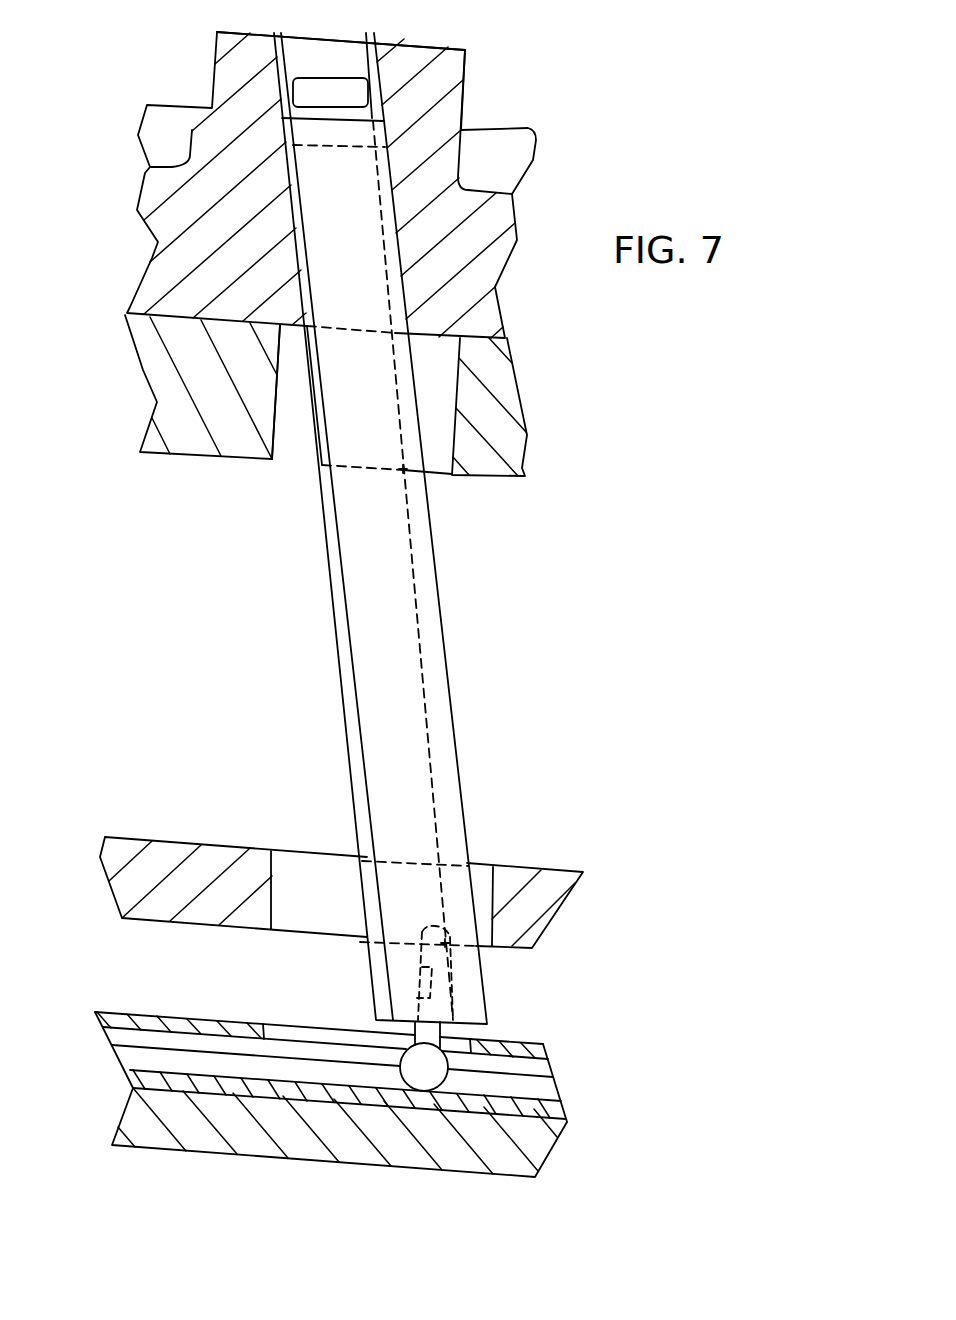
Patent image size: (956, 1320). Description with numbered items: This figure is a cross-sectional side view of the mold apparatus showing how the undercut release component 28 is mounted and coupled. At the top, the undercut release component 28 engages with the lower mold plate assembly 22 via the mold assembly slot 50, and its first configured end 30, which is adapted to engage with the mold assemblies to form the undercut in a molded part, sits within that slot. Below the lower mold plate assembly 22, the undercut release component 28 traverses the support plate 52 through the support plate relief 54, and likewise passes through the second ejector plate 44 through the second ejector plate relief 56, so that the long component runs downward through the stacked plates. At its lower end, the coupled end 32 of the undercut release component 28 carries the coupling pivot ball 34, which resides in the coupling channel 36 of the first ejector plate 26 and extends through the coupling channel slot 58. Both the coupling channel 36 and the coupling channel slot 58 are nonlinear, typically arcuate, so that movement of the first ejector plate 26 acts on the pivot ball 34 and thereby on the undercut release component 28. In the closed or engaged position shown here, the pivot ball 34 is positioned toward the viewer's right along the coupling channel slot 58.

The lower mold plate assembly 22 is at (516, 209).
The first ejector plate 26 is at (567, 1108).
The undercut release component 28 is at (440, 604).
The first configured end 30 is at (308, 50).
The coupled end 32 is at (487, 1013).
The coupling pivot ball 34 is at (448, 1068).
The coupling channel 36 is at (560, 1087).
The second ejector plate 44 is at (566, 904).
The mold assembly slot 50 is at (462, 118).
The support plate 52 is at (520, 398).
The support plate relief 54 is at (297, 468).
The second ejector plate relief 56 is at (301, 850).
The coupling channel slot 58 is at (290, 1024).